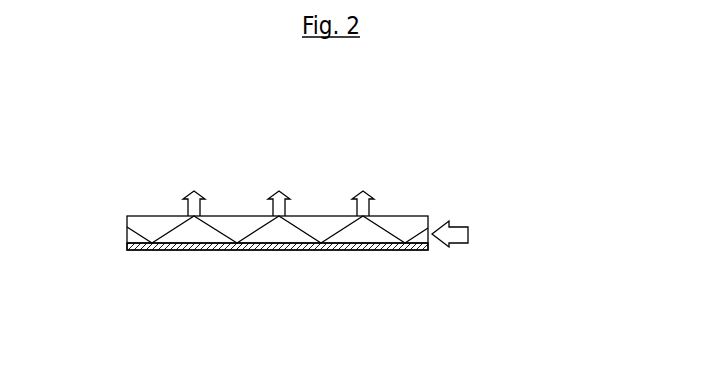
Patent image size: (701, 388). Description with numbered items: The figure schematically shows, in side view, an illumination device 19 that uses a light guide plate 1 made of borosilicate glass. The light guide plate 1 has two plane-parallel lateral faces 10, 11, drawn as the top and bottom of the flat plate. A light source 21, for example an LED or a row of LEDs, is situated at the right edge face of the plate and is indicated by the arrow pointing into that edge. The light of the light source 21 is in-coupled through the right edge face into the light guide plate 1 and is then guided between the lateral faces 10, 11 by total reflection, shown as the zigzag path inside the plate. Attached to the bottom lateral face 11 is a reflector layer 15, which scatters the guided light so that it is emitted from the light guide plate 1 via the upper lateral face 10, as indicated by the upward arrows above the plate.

The lateral face 10 is at (155, 216).
The light guide plate 1 is at (127, 225).
The reflector layer 15 is at (127, 245).
The lateral face 11 is at (155, 248).
The light source 21 is at (468, 235).
The illumination device 19 is at (485, 182).